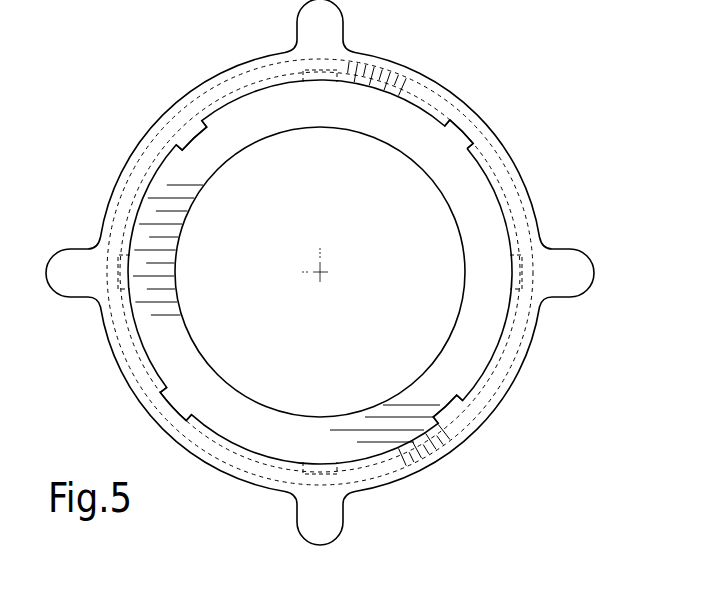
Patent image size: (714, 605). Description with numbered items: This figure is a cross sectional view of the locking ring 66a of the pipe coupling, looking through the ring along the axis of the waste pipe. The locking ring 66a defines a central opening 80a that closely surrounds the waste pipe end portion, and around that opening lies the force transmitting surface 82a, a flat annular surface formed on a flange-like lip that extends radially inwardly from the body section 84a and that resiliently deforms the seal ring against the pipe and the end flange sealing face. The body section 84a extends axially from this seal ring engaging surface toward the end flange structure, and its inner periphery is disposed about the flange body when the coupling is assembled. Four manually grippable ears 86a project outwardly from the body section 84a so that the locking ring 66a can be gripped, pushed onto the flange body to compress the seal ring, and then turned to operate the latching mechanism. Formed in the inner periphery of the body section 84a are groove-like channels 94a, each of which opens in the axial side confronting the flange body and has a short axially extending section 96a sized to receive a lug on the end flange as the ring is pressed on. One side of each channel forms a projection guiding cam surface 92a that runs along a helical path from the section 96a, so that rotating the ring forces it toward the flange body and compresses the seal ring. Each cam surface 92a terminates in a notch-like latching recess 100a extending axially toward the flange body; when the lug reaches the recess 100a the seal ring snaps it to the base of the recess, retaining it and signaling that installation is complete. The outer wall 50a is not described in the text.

The housing body 50a is at (518, 340).
The locking ring 66a is at (128, 392).
The opening 80a is at (458, 318).
The force transmitting surface 82a is at (168, 332).
The body section 84a is at (127, 344).
The manually grippable ears 86a is at (318, 23).
The projection guiding cam surfaces 92a is at (228, 97).
The groove-like channel 94a is at (455, 125).
The axially extending section 96a is at (465, 140).
The latching recess 100a is at (322, 75).